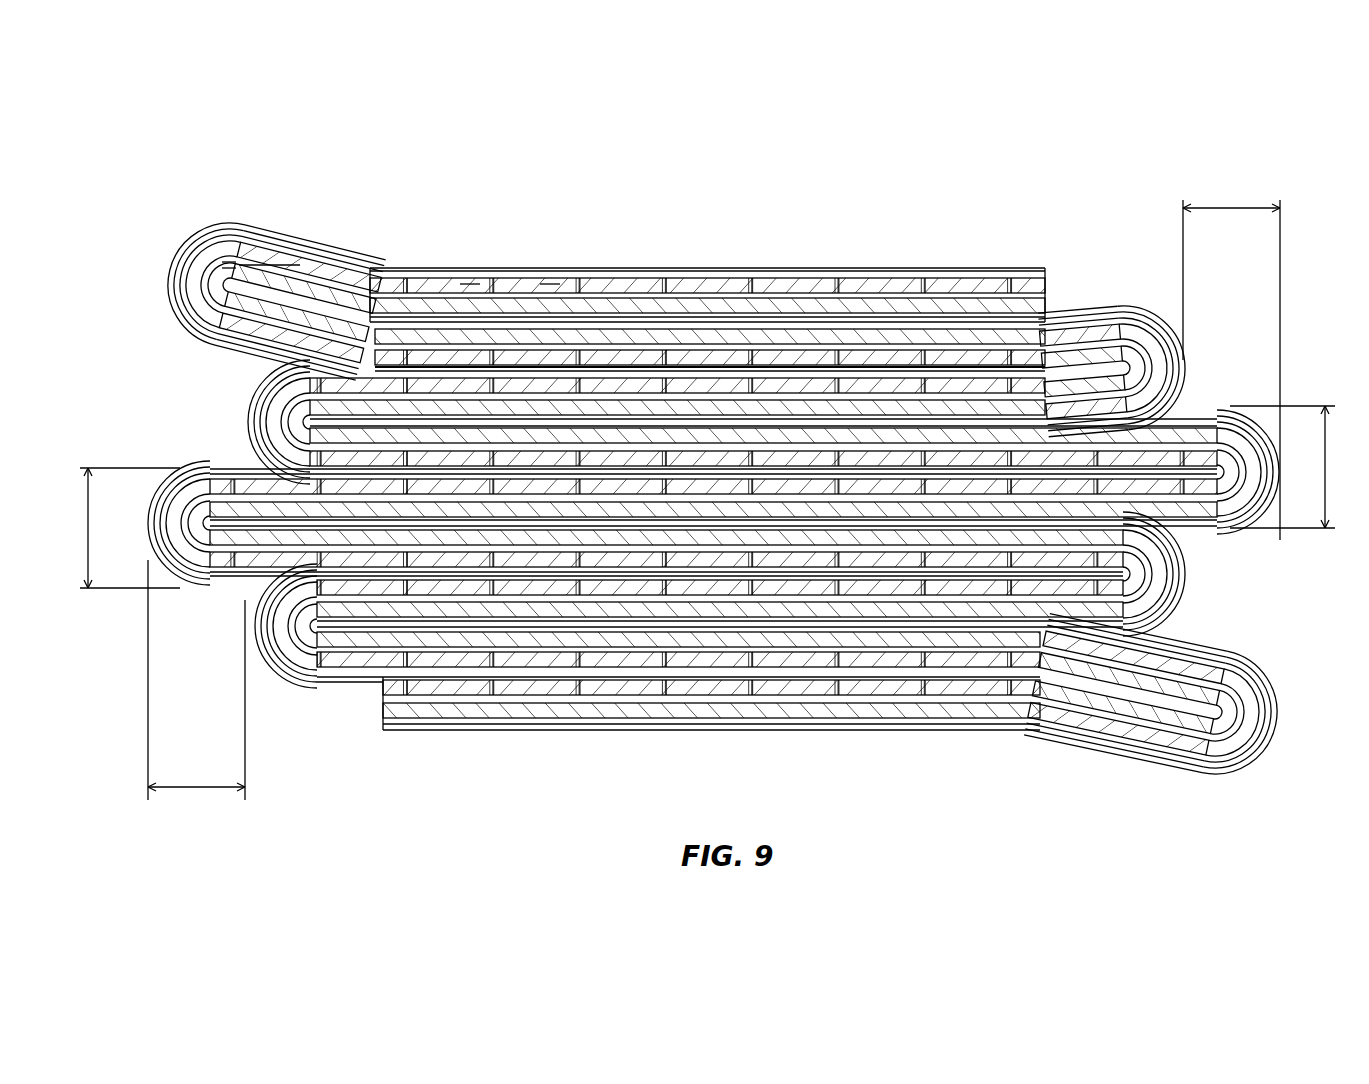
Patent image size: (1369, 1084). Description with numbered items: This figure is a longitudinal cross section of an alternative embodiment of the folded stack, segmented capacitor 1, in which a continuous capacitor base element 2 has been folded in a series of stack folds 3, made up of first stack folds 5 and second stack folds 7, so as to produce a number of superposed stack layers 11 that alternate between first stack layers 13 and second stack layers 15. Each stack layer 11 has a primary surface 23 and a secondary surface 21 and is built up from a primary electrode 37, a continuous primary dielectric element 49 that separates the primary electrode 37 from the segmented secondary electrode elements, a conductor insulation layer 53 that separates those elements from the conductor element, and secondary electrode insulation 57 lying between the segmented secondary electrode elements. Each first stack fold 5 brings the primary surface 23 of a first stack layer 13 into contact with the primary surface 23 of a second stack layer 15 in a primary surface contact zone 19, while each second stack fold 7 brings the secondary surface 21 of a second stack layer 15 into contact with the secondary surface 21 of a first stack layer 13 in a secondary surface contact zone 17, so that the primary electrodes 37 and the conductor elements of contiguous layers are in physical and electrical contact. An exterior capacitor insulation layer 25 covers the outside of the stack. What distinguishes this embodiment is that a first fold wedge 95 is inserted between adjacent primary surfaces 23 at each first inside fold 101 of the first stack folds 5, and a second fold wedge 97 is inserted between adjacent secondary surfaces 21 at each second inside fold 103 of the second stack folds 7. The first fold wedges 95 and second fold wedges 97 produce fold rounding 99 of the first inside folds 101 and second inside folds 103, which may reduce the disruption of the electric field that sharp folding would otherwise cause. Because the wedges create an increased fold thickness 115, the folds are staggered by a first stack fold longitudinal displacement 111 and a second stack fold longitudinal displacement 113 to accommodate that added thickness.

The folded stack, segmented capacitor 1 is at (610, 280).
The continuous capacitor base element 2 is at (183, 245).
The stack folds 3 is at (165, 282).
The first stack folds 5 is at (168, 305).
The second stack folds 7 is at (1185, 365).
The stack layers 11 is at (372, 270).
The first stack layers 13 is at (712, 285).
The second stack layers 15 is at (1140, 350).
The secondary surface contact zone 17 is at (1065, 360).
The primary surface contact zone 19 is at (440, 280).
The secondary surface 21 is at (910, 280).
The primary surface 23 is at (415, 277).
The exterior capacitor insulation layer 25 is at (437, 735).
The primary electrode 37 is at (795, 280).
The continuous primary dielectric element 49 is at (262, 265).
The conductor insulation layer 53 is at (550, 282).
The secondary electrode insulation 57 is at (470, 282).
The first fold wedge 95 is at (228, 265).
The second fold wedge 97 is at (1195, 380).
The fold rounding 99 is at (175, 335).
The first inside fold 101 is at (228, 262).
The second inside fold 103 is at (1120, 355).
The first stack fold longitudinal displacement 111 is at (195, 795).
The second stack fold longitudinal displacement 113 is at (1222, 208).
The increased fold thickness 115 is at (706, 497).